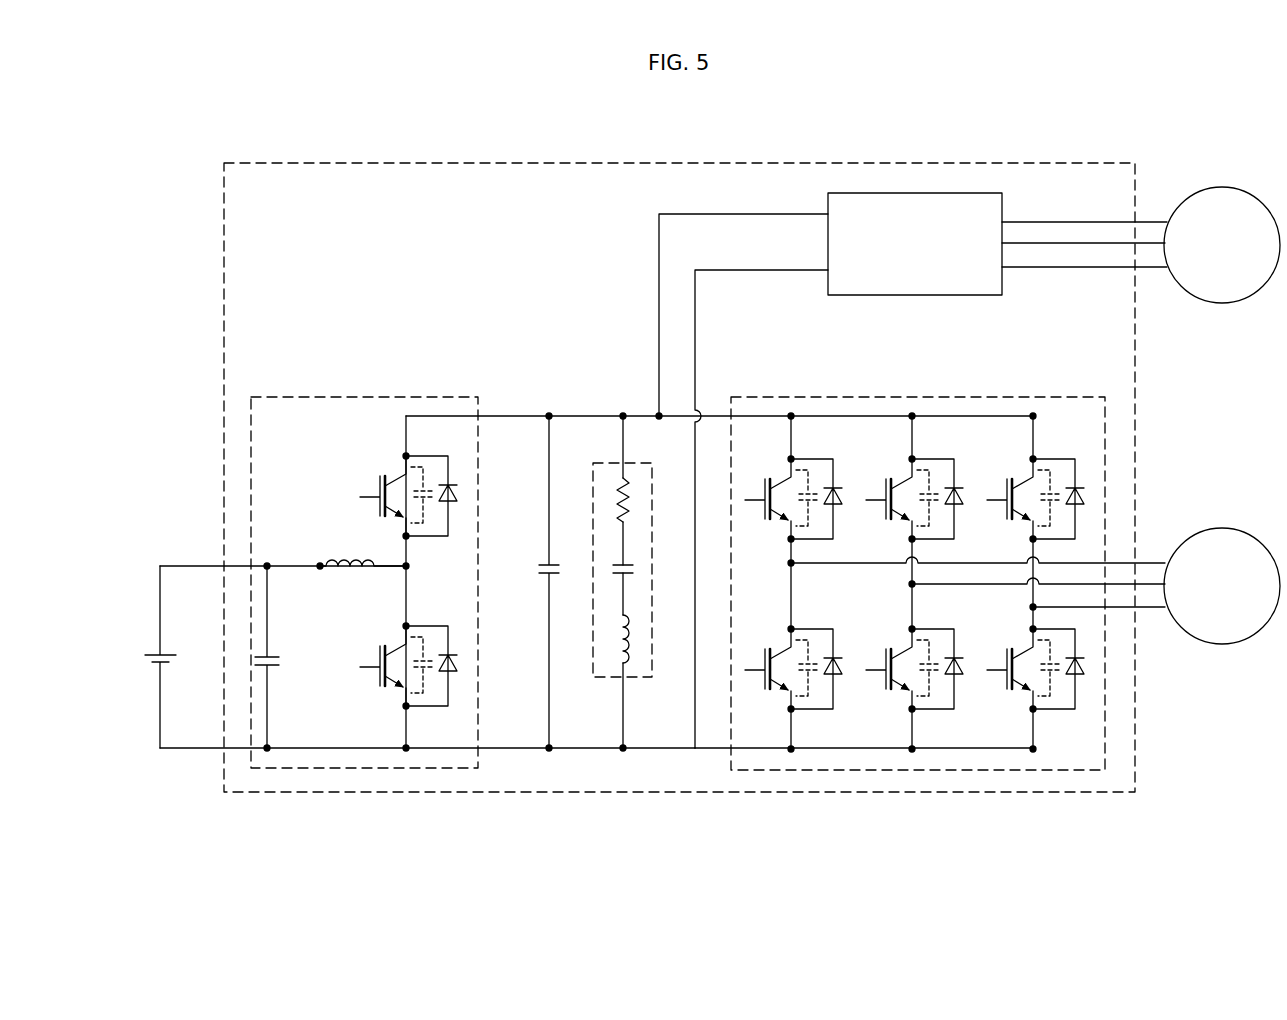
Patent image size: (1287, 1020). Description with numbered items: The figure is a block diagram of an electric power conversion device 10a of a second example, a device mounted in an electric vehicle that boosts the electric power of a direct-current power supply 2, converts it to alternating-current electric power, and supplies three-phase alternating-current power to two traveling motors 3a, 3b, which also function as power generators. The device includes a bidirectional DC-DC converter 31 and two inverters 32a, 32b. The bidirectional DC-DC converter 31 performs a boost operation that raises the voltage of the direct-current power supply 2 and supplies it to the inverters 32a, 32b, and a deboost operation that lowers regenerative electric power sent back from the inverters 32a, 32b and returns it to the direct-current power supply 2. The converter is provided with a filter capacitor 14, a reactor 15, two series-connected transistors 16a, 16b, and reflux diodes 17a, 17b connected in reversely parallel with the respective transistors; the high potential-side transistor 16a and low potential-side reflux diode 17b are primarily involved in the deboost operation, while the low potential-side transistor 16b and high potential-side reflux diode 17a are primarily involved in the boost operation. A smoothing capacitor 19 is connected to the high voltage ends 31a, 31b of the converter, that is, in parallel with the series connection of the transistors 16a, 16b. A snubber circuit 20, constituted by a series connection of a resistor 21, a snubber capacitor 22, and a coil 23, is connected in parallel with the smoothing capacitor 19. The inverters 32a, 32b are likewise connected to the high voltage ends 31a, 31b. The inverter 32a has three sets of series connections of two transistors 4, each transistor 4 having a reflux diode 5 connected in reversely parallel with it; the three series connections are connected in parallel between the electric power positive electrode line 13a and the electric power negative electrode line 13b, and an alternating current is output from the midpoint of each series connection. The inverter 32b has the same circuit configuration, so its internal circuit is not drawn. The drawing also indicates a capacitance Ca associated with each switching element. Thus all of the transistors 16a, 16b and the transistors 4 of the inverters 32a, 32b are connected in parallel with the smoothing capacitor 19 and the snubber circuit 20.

The direct-current power supply 2 is at (160, 654).
The motor 3a is at (1256, 543).
The motor 3b is at (1264, 287).
The transistor 4 is at (760, 487).
The reflux diode 5 is at (837, 505).
The electric power conversion device 10a is at (224, 219).
The electric power positive electrode line 13a is at (646, 414).
The electric power negative electrode line 13b is at (638, 752).
The filter capacitor 14 is at (267, 656).
The reactor 15 is at (333, 565).
The transistor 16a is at (368, 490).
The transistor 16b is at (368, 674).
The reflux diode 17a is at (449, 485).
The reflux diode 17b is at (449, 655).
The smoothing capacitor 19 is at (548, 563).
The snubber circuit 20 is at (600, 462).
The resistor 21 is at (628, 505).
The snubber capacitor 22 is at (630, 567).
The coil 23 is at (629, 637).
The bidirectional DC-DC converter 31 is at (307, 396).
The high voltage end 31a is at (549, 414).
The high voltage end 31b is at (549, 752).
The inverter 32a is at (782, 396).
The inverter 32b is at (958, 296).
The parasitic capacitance Ca is at (428, 515).